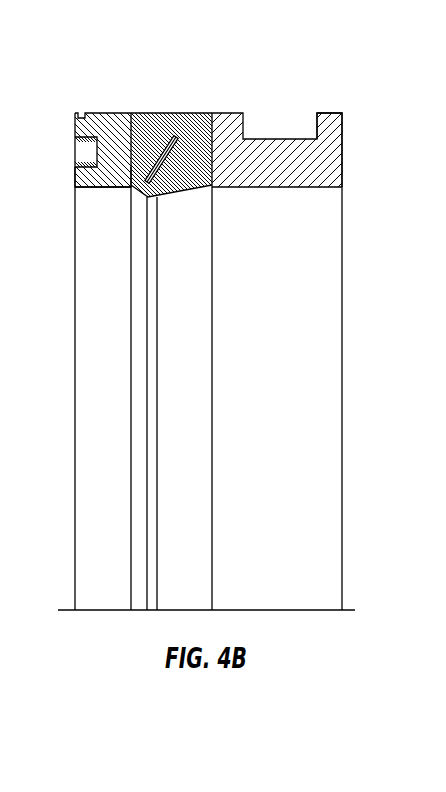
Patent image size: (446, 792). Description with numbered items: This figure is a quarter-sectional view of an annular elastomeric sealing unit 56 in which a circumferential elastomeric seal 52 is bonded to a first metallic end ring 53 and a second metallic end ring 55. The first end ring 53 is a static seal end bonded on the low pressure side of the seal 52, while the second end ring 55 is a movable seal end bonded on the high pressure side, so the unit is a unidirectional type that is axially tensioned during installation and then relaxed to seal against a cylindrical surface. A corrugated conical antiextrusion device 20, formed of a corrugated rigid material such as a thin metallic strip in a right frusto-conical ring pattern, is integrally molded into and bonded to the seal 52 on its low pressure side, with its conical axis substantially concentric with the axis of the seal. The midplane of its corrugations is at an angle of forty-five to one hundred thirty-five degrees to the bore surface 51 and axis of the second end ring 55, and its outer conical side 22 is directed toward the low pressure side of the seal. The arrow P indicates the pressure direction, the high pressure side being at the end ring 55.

The annular elastomeric sealing unit 56 is at (217, 88).
The first metallic end ring 53 is at (76, 129).
The outer conical side 22 is at (148, 147).
The elastomeric seal 52 is at (195, 112).
The antiextrusion device 20 is at (133, 165).
The second metallic end ring 55 is at (342, 143).
The bore surface 51 is at (250, 187).
The pressure direction P is at (313, 401).